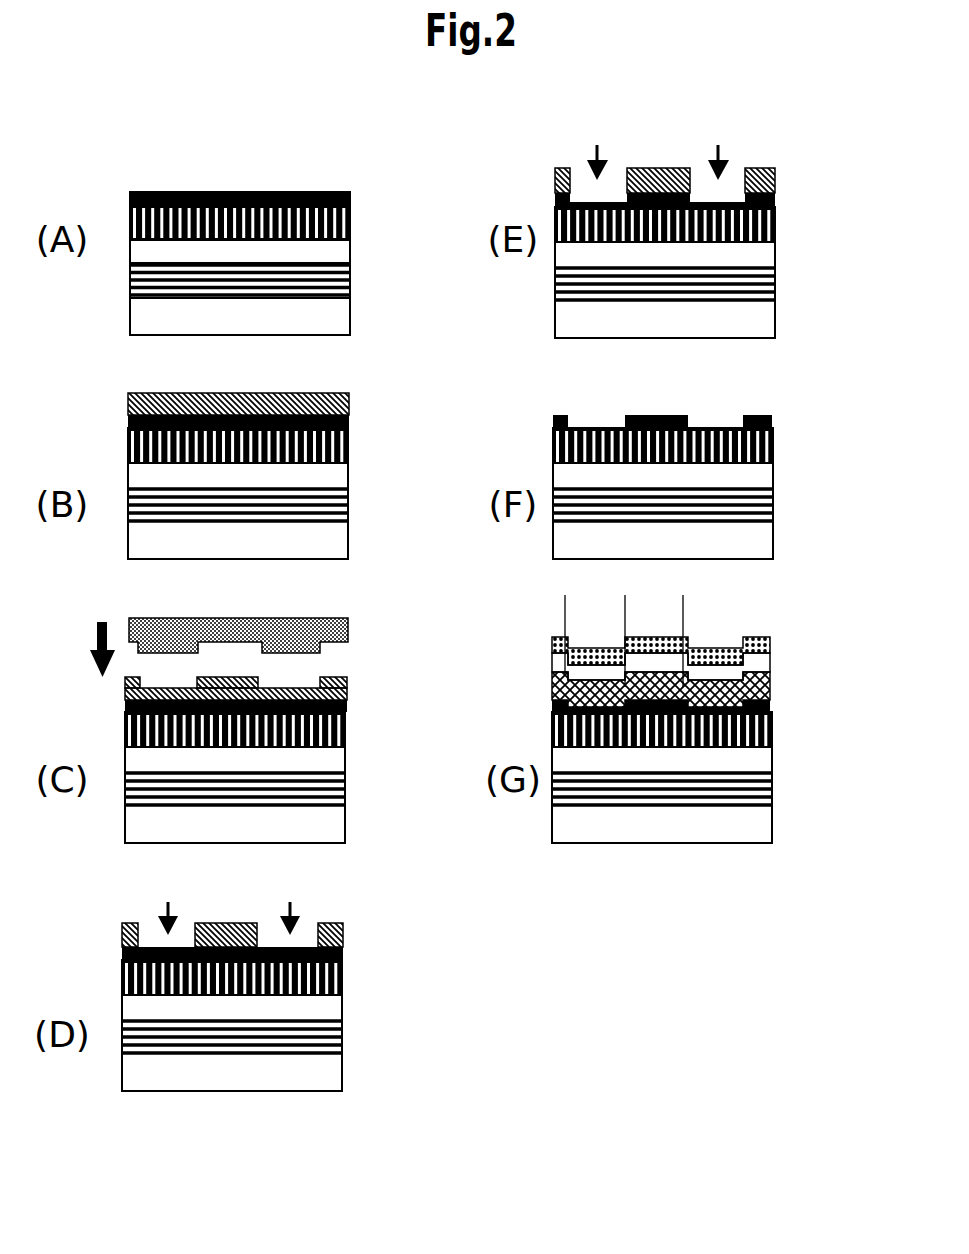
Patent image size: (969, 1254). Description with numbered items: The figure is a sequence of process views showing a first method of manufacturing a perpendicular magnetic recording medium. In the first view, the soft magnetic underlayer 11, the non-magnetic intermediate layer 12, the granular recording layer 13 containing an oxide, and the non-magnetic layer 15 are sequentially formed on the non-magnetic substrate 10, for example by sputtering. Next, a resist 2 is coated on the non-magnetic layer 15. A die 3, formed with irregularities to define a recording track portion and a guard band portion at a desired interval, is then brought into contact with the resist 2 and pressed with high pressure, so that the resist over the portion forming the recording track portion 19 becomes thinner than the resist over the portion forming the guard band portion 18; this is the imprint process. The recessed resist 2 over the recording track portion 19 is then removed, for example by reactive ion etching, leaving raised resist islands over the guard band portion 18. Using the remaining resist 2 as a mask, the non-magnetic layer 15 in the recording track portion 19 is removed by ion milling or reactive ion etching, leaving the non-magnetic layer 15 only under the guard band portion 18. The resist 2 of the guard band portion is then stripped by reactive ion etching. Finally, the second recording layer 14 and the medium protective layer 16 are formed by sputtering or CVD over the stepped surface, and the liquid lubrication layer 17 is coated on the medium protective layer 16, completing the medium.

The resist 2 is at (349, 395).
The die (stamp) 3 is at (348, 620).
The non-magnetic substrate 10 is at (325, 325).
The soft magnetic underlayer 11 is at (325, 288).
The non-magnetic intermediate layer 12 is at (325, 252).
The granular recording layer (first recording layer) 13 is at (338, 207).
The second recording layer 14 is at (768, 680).
The non-magnetic layer 15 is at (330, 190).
The medium protective layer 16 is at (755, 665).
The liquid lubrication layer 17 is at (768, 637).
The guard band portion 18 is at (625, 605).
The recording track portion 19 is at (565, 622).